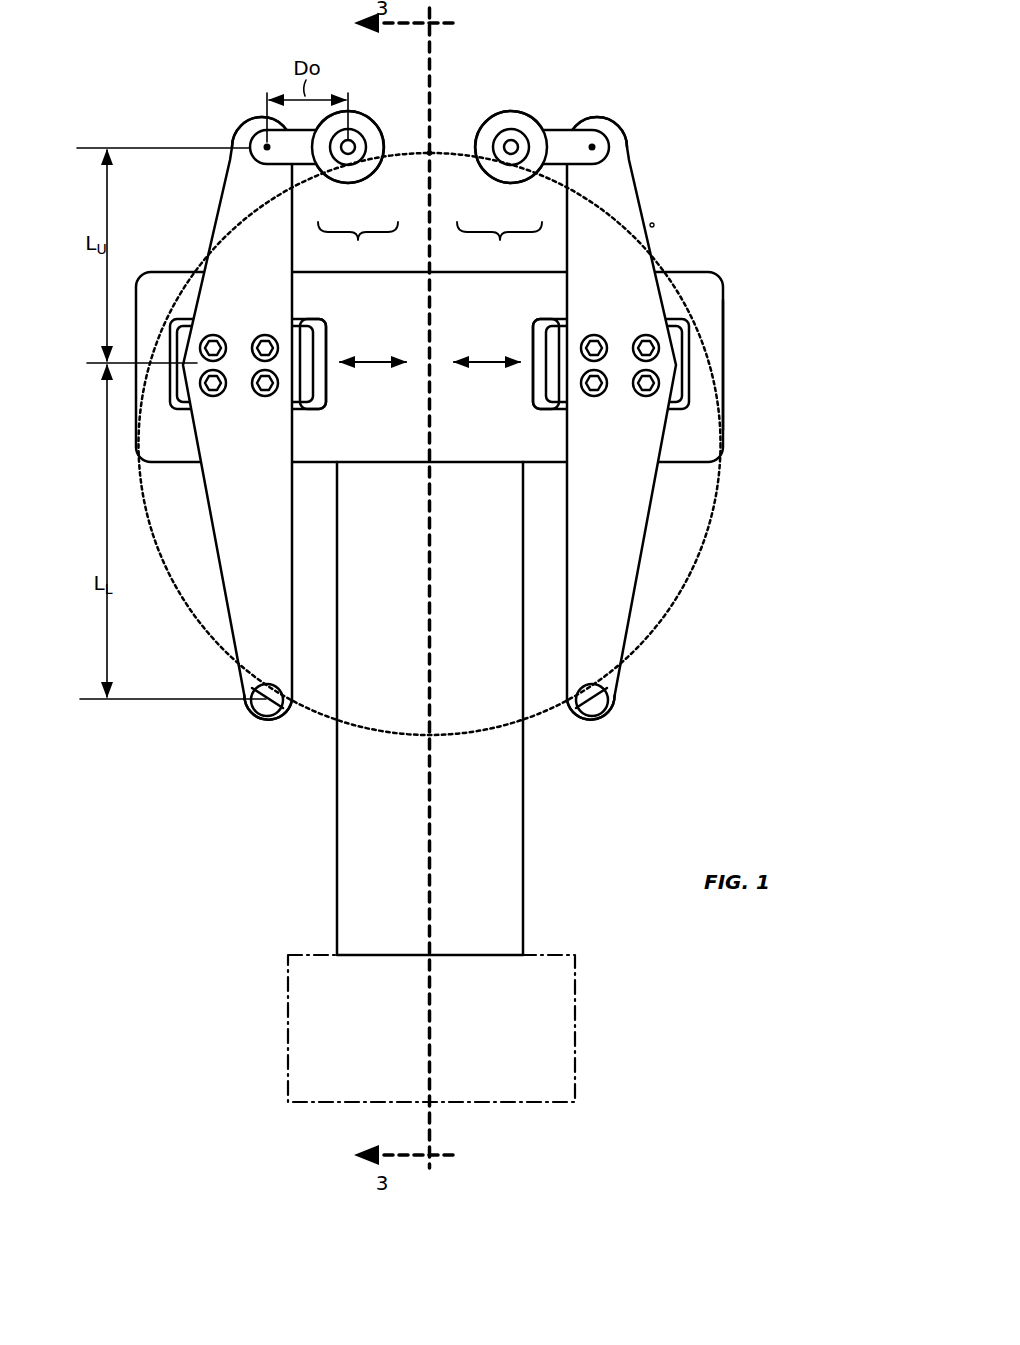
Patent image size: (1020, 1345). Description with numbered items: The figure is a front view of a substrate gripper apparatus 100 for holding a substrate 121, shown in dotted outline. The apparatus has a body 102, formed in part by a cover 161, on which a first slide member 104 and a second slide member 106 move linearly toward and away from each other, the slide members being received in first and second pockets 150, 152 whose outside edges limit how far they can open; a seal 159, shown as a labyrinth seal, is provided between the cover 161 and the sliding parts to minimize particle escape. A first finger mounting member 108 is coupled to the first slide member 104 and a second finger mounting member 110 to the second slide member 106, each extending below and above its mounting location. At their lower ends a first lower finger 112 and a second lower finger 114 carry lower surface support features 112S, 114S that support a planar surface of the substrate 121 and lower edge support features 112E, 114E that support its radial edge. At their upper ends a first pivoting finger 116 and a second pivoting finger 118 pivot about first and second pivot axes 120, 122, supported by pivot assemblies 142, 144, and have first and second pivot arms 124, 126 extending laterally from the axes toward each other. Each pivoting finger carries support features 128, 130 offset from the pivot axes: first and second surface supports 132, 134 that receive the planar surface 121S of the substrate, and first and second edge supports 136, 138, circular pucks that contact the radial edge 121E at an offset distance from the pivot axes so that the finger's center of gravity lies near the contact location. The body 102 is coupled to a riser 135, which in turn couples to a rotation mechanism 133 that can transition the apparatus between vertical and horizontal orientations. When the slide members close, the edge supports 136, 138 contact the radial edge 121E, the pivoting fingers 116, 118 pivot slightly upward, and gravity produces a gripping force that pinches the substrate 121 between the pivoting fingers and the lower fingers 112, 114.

The substrate gripper apparatus 100 is at (620, 78).
The body 102 is at (714, 270).
The first slide member 104 is at (316, 375).
The second slide member 106 is at (542, 375).
The first finger mounting member 108 is at (218, 210).
The second finger mounting member 110 is at (641, 200).
The first lower finger 112 is at (243, 707).
The lower surface support feature 112S is at (270, 690).
The lower edge support feature 112E is at (266, 720).
The second lower finger 114 is at (616, 706).
The lower surface support feature 114S is at (584, 690).
The lower edge support feature 114E is at (594, 718).
The first pivoting finger 116 is at (370, 110).
The second pivoting finger 118 is at (498, 110).
The first pivot axis 120 is at (264, 143).
The substrate 121 is at (724, 500).
The planar surface 121S is at (478, 195).
The radial edge 121E is at (650, 226).
The second pivot axis 122 is at (594, 143).
The first pivot arm 124 is at (283, 150).
The second pivot arm 126 is at (552, 143).
The support features 128 is at (358, 243).
The support features 130 is at (499, 244).
The first surface support 132 is at (348, 160).
The rotation mechanism 133 is at (588, 1018).
The second surface support 134 is at (510, 168).
The riser 135 is at (524, 813).
The first edge support 136 is at (352, 166).
The second edge support 138 is at (508, 160).
The pivot assembly 142 is at (230, 138).
The pivot assembly 144 is at (628, 140).
The first pocket 150 is at (320, 320).
The second pocket 152 is at (544, 320).
The seal 159 is at (318, 410).
The cover 161 is at (724, 318).